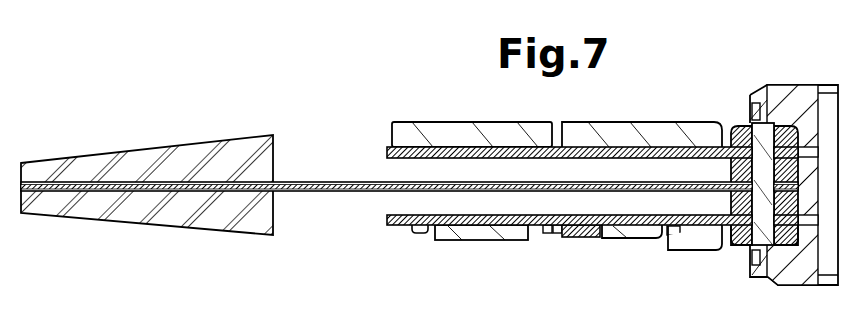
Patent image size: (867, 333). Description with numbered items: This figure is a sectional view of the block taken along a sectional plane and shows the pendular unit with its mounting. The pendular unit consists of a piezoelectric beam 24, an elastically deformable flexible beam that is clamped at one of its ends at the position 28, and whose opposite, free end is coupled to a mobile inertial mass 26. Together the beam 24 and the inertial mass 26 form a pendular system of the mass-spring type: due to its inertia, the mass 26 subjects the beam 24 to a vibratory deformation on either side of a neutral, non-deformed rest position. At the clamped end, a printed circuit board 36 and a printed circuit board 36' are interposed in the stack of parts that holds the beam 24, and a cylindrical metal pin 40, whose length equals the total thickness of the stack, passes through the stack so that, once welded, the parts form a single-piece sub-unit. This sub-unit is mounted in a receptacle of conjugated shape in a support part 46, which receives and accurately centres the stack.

The piezoelectric beam 24 is at (336, 181).
The mobile inertial mass 26 is at (177, 160).
The clamping position 28 is at (742, 165).
The printed circuit board 36 is at (571, 124).
The printed circuit board 36' is at (556, 239).
The pin 40 is at (722, 168).
The support part 46 is at (784, 94).